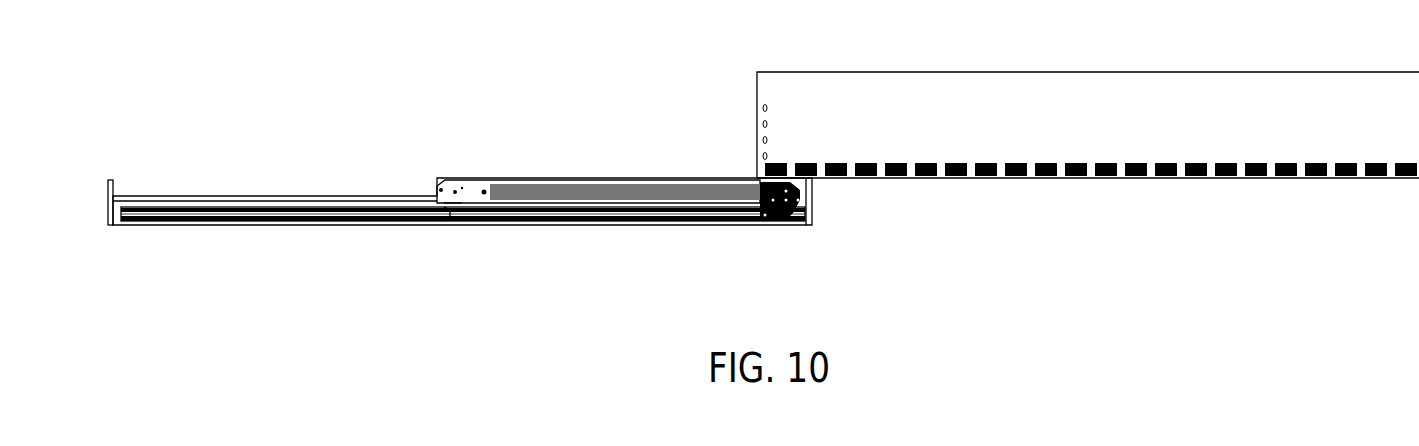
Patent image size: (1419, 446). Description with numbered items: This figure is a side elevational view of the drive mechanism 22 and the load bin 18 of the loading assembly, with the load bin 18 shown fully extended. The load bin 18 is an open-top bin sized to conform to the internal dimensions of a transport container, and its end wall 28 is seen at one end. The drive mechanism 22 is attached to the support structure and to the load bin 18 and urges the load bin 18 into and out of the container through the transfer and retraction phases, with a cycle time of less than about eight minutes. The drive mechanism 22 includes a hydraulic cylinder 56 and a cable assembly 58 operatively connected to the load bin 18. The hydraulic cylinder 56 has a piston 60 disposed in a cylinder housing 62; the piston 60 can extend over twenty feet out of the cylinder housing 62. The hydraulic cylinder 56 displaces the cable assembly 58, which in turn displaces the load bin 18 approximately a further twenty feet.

The load bin 18 is at (1336, 130).
The drive mechanism 22 is at (465, 130).
The end wall 28 is at (752, 128).
The hydraulic cylinder 56 is at (467, 222).
The cable assembly 58 is at (570, 178).
The piston 60 is at (558, 222).
The cylinder housing 62 is at (262, 222).